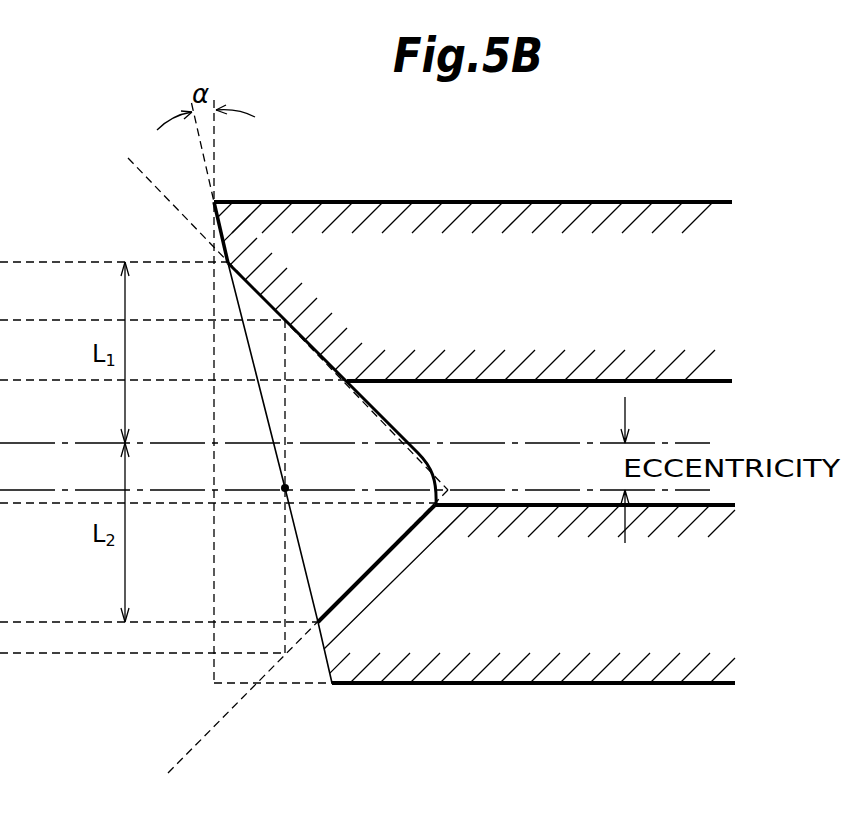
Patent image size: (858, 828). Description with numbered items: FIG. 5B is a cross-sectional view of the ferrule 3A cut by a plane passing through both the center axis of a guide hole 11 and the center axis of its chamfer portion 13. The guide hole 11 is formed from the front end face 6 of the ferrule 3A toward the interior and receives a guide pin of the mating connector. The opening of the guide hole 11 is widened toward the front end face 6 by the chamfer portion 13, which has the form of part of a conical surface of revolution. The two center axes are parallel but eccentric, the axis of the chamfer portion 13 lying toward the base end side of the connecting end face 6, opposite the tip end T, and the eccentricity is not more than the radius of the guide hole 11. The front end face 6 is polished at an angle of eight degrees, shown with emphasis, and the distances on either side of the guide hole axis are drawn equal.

The ferrule 3A is at (613, 212).
The guide hole 11 is at (570, 397).
The chamfer portion 13 is at (358, 562).
The front end face 6 is at (320, 650).
The tip end T is at (238, 212).